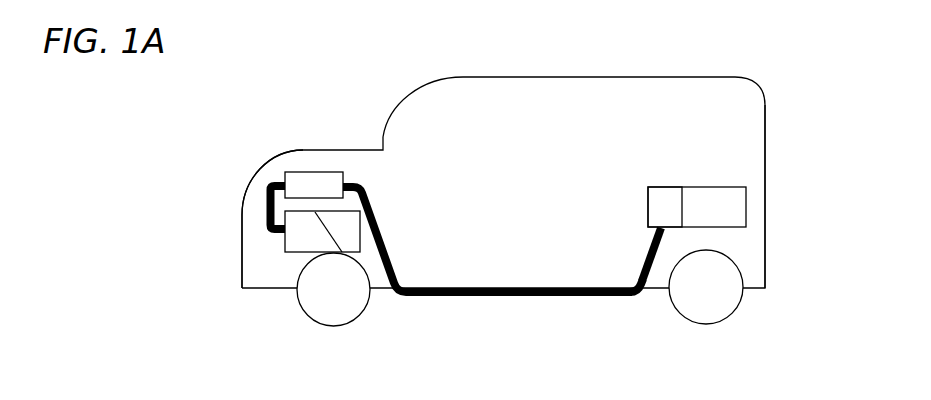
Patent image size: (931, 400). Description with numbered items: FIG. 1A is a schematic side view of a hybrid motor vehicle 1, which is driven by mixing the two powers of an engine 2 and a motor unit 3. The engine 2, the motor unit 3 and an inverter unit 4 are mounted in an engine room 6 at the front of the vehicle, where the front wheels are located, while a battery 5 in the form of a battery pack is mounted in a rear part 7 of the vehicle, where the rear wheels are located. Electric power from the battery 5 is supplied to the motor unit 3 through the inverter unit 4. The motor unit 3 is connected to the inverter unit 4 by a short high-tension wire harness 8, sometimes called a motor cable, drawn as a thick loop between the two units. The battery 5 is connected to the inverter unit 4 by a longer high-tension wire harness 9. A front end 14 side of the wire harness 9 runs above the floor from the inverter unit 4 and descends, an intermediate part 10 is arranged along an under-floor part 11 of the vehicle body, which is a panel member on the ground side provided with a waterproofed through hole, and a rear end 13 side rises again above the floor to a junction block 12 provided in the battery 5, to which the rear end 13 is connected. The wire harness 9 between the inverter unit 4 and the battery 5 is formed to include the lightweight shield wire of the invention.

The hybrid motor vehicle 1 is at (342, 109).
The engine 2 is at (348, 242).
The motor unit 3 is at (293, 240).
The inverter unit 4 is at (303, 181).
The battery 5 is at (737, 203).
The engine room 6 is at (270, 280).
The rear part 7 is at (752, 250).
The wire harness 8 is at (266, 208).
The wire harness 9 is at (470, 298).
The intermediate part 10 is at (538, 298).
The under-floor part 11 is at (655, 294).
The junction block 12 is at (664, 197).
The rear end 13 is at (653, 237).
The front end 14 is at (350, 180).